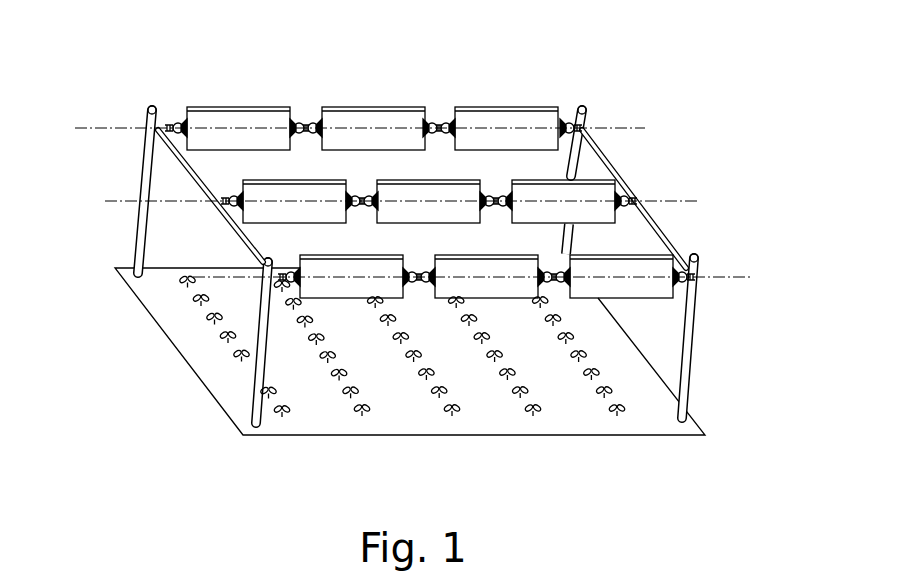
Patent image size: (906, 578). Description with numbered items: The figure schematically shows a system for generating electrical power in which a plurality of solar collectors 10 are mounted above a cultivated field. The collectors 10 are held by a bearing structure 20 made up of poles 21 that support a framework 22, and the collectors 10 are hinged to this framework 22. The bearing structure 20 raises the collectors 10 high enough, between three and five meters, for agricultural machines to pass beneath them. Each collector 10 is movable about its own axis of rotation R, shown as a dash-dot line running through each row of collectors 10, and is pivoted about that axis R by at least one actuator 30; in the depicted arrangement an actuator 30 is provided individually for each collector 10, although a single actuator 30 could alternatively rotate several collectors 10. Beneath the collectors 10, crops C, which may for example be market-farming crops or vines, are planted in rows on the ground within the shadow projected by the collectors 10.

The solar collector 10 is at (232, 105).
The actuator 30 is at (185, 117).
The bearing structure 20 is at (414, 273).
The pole 21 is at (133, 258).
The framework 22 is at (227, 220).
The axis of rotation R is at (120, 127).
The crops C is at (282, 420).